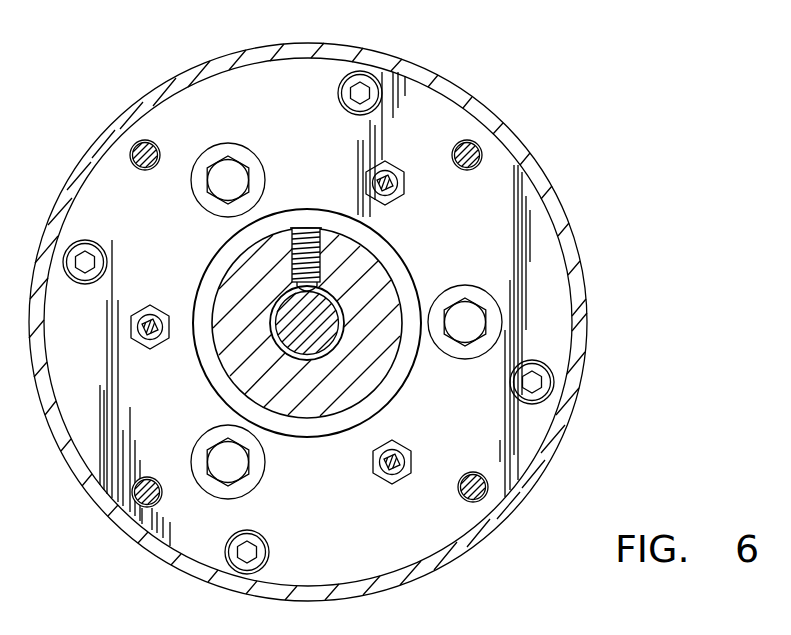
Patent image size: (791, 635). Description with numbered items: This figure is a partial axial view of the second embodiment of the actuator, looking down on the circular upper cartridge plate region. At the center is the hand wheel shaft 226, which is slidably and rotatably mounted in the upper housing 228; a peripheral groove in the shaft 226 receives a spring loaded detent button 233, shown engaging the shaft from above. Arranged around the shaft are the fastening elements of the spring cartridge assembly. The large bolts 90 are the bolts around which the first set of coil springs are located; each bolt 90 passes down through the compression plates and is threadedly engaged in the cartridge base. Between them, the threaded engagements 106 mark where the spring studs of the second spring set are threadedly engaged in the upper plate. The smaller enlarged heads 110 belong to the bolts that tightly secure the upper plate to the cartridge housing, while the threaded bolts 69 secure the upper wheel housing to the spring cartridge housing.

The spring loaded detent button 233 is at (297, 287).
The upper housing 228 is at (384, 272).
The hand wheel shaft 226 is at (323, 333).
The bolt 90 is at (460, 322).
The enlarged head 110 is at (535, 383).
The threaded bolt 69 is at (483, 498).
The threaded engagement 106 is at (393, 472).